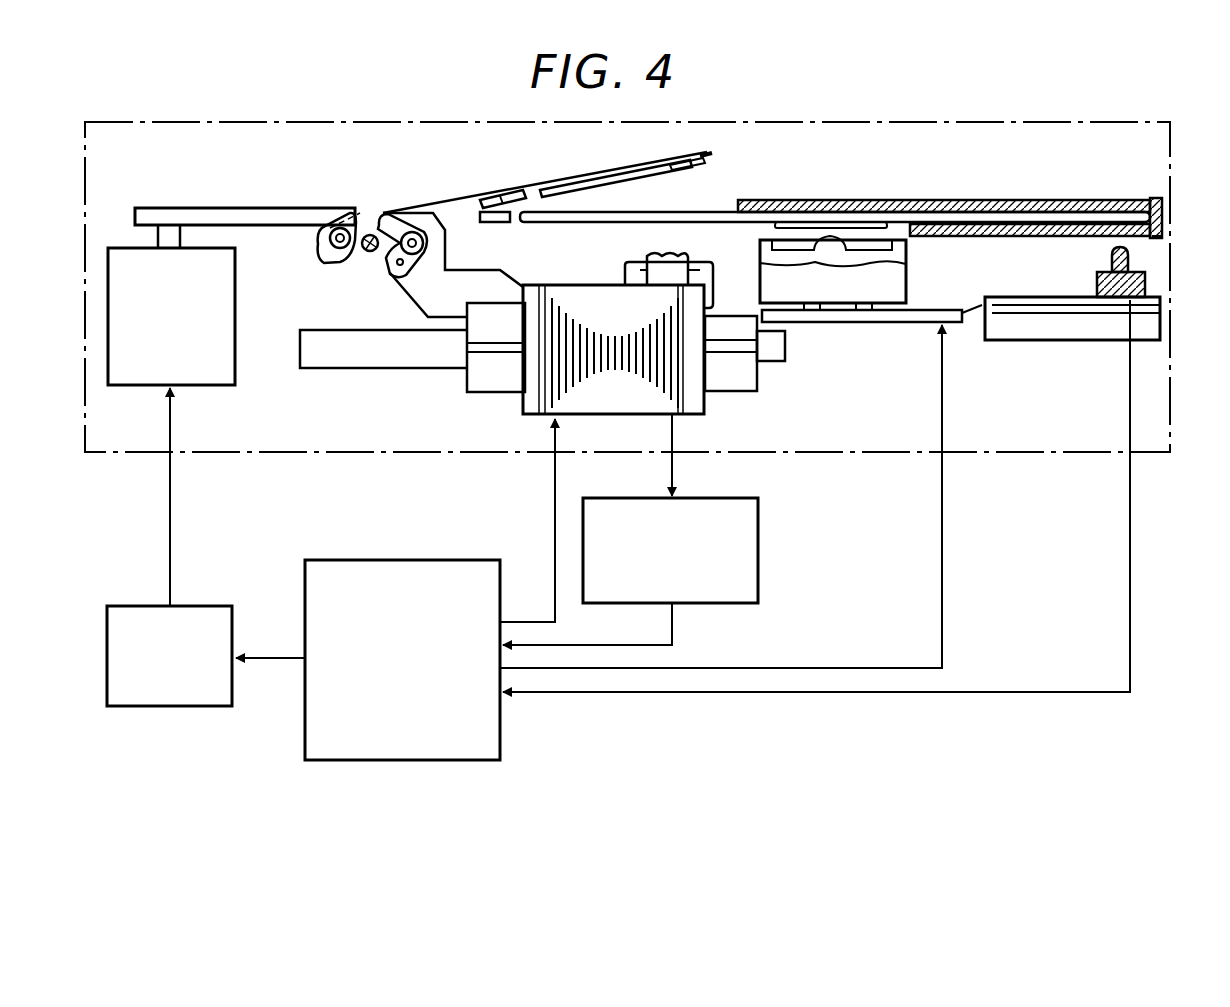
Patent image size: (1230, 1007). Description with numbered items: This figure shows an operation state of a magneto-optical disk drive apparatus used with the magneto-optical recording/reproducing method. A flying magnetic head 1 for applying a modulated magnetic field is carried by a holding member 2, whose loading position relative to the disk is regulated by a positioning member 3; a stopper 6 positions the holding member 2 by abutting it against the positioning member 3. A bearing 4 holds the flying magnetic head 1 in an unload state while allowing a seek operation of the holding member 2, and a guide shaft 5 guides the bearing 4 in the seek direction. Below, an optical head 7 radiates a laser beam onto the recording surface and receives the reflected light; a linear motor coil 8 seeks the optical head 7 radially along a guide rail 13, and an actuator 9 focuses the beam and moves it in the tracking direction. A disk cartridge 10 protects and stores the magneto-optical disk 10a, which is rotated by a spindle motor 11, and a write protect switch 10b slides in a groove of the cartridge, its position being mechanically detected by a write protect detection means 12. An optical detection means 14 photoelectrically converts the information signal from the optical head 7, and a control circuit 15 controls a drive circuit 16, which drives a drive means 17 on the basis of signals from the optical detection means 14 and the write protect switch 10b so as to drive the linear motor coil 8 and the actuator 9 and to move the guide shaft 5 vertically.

The flying magnetic head 1 is at (600, 183).
The holding member 2 is at (470, 194).
The positioning member 3 is at (394, 212).
The bearing 4 is at (358, 232).
The guide shaft 5 is at (278, 212).
The stopper 6 is at (370, 251).
The optical head 7 is at (480, 374).
The linear motor coil 8 is at (657, 392).
The actuator 9 is at (666, 272).
The disk cartridge 10 is at (1072, 200).
The magneto-optical disk 10a is at (660, 212).
The write protect switch 10b is at (1142, 240).
The spindle motor 11 is at (886, 290).
The write protect detection means 12 is at (1148, 290).
The guide rail 13 is at (368, 356).
The optical detection means 14 is at (760, 548).
The control circuit 15 is at (440, 560).
The drive circuit 16 is at (200, 606).
The drive means 17 is at (236, 368).